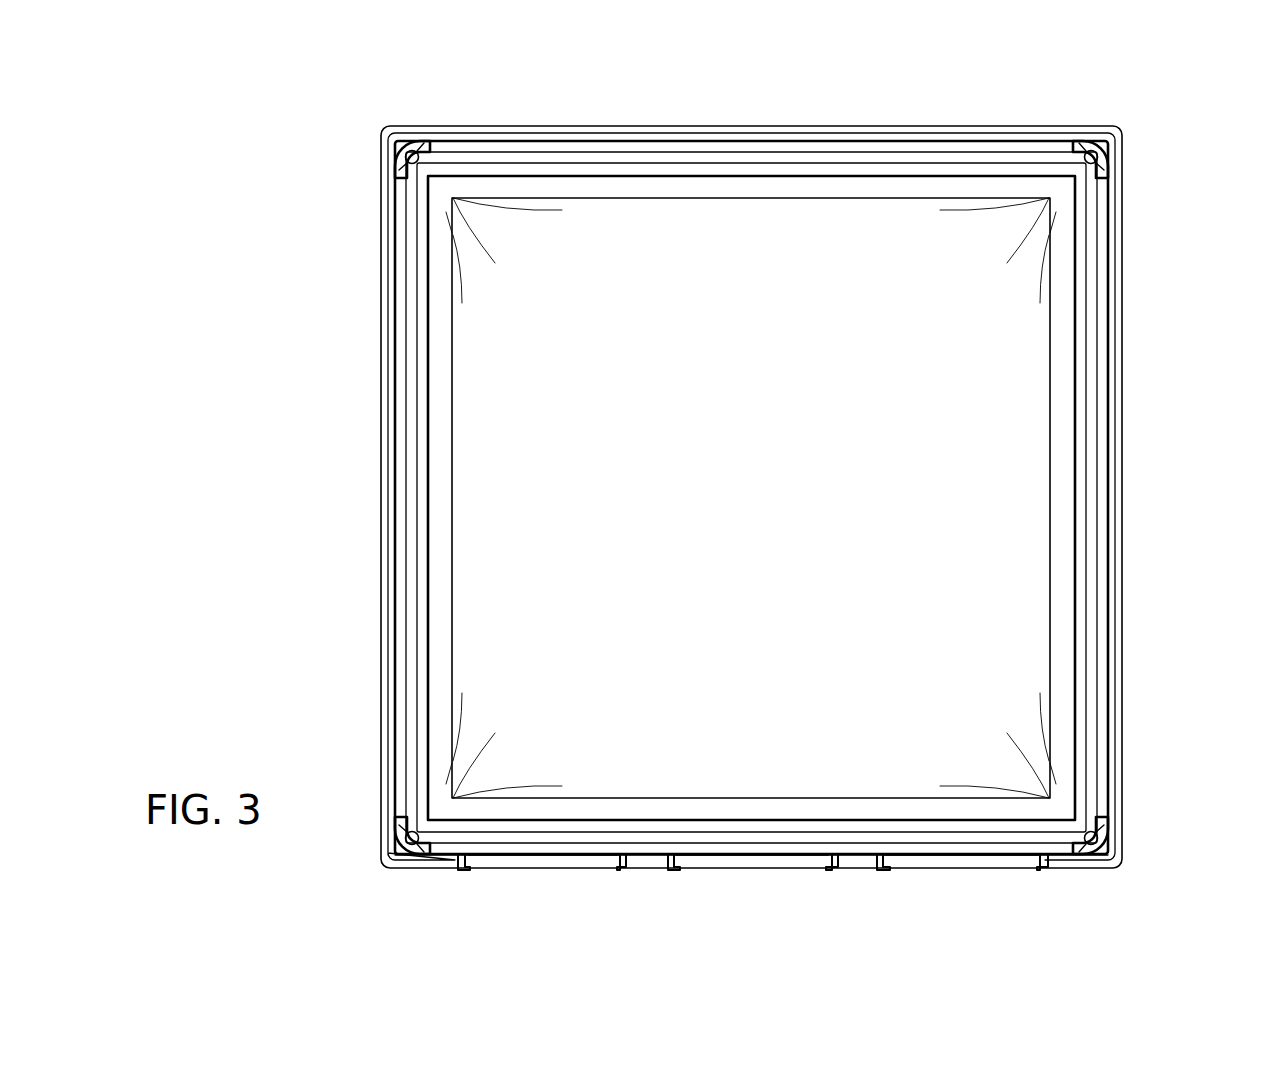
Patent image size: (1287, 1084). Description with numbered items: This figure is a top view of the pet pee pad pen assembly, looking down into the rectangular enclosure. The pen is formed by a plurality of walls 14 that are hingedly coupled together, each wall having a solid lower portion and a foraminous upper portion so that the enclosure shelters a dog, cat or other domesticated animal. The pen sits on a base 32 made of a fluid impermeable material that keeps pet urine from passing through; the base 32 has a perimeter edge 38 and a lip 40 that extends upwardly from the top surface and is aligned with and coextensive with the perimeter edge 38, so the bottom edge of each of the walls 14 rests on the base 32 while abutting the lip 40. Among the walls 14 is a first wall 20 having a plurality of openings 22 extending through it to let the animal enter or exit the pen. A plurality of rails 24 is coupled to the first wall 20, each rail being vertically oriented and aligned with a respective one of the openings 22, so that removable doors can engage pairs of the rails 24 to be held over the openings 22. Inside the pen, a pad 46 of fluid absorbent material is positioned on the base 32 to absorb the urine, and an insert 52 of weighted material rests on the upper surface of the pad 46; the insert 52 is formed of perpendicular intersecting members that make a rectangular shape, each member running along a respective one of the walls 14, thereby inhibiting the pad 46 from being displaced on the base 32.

The walls 14 is at (717, 140).
The first wall 20 is at (1048, 871).
The openings 22 is at (537, 862).
The rails 24 is at (461, 872).
The base 32 is at (503, 138).
The perimeter edge 38 is at (1125, 256).
The lip 40 is at (1112, 182).
The pad 46 is at (905, 265).
The insert 52 is at (526, 176).